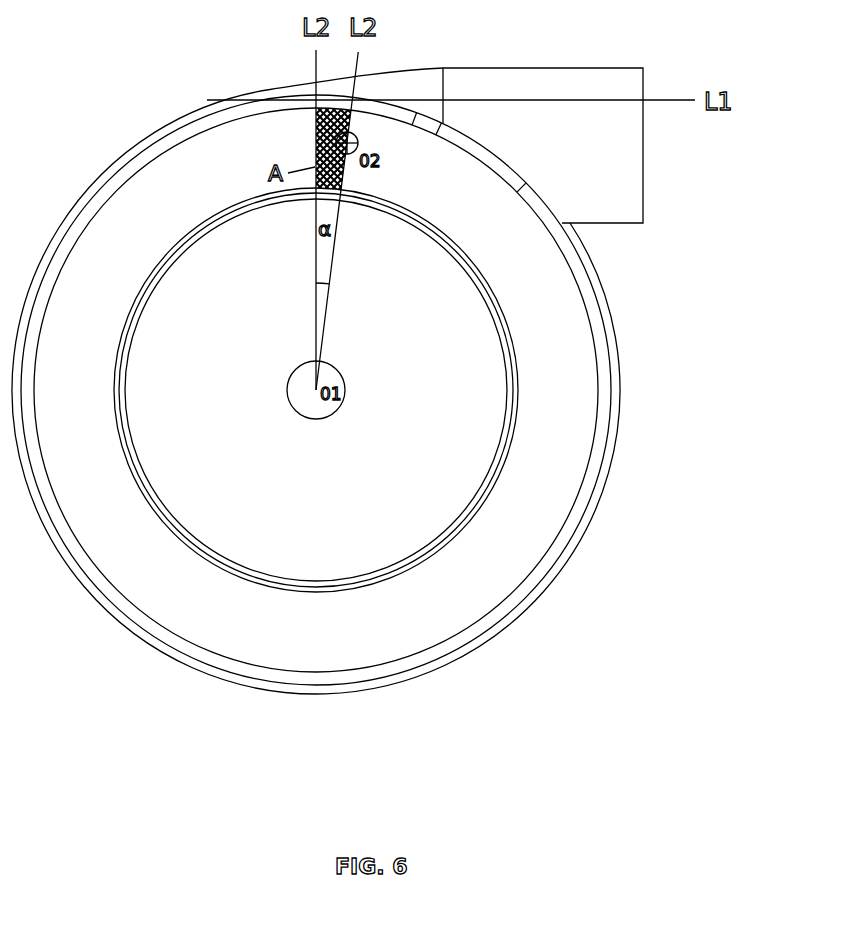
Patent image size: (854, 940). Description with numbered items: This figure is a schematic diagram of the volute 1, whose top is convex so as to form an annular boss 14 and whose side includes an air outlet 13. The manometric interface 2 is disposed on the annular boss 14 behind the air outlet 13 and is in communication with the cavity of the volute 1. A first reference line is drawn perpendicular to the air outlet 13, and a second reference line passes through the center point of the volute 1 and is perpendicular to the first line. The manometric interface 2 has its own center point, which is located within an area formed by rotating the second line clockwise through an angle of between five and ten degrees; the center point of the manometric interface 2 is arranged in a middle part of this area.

The volute 1 is at (427, 382).
The manometric interface 2 is at (352, 135).
The air outlet 13 is at (643, 165).
The annular boss 14 is at (515, 538).